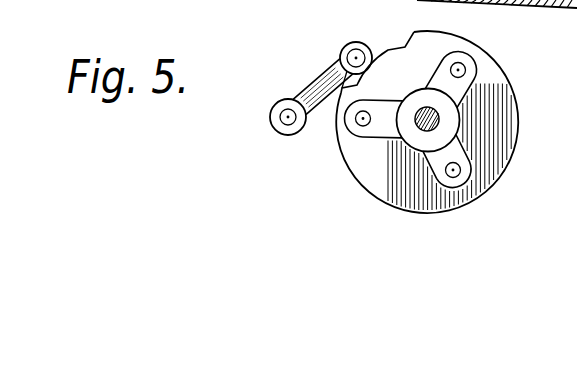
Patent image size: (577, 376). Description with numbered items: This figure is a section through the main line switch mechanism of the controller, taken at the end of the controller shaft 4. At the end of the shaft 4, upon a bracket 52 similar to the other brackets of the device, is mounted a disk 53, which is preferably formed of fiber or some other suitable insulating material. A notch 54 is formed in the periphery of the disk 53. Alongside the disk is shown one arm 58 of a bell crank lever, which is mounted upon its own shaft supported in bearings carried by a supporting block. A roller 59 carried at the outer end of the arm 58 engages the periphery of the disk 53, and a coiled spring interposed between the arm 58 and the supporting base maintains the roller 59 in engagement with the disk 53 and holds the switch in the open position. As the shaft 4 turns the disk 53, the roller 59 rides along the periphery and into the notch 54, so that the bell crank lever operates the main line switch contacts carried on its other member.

The shaft 4 is at (426, 116).
The bracket 52 is at (399, 134).
The disk 53 is at (518, 115).
The notch 54 is at (397, 50).
The arm of bell crank lever 58 is at (313, 83).
The roller 59 is at (357, 42).